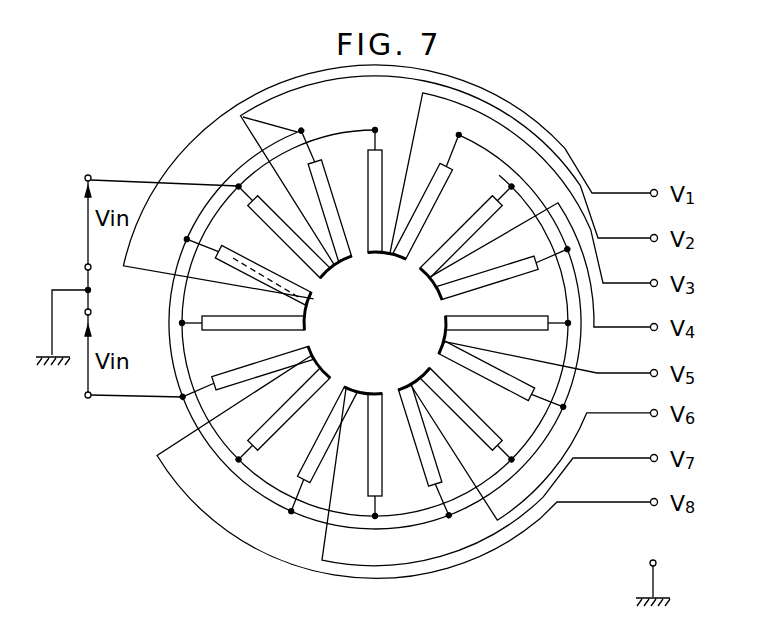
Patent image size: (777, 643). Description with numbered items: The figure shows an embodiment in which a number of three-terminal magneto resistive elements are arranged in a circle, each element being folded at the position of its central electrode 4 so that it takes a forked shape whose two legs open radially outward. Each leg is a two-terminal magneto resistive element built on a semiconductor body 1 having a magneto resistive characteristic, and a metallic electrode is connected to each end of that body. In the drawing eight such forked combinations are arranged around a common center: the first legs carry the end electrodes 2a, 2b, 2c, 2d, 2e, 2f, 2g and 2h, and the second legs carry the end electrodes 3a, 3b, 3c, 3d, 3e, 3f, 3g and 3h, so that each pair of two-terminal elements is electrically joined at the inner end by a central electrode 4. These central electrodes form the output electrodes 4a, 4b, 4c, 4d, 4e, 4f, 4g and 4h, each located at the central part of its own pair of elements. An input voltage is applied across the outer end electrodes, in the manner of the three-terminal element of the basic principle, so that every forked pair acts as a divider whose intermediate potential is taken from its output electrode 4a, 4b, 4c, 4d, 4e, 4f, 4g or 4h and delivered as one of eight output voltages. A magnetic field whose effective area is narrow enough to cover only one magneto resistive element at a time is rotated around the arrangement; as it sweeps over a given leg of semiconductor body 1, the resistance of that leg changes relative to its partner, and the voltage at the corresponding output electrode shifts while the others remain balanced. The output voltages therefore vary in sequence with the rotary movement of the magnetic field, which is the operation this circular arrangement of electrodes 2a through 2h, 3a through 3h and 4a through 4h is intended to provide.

The semiconductor body 1 is at (375, 320).
The end electrode 2a is at (387, 186).
The end electrode 2b is at (469, 225).
The end electrode 2c is at (508, 311).
The end electrode 2d is at (471, 417).
The end electrode 2e is at (387, 456).
The end electrode 2f is at (281, 418).
The end electrode 2g is at (242, 337).
The end electrode 2h is at (281, 224).
The end electrode 3a is at (435, 195).
The end electrode 3b is at (502, 270).
The end electrode 3c is at (502, 375).
The end electrode 3d is at (428, 450).
The end electrode 3e is at (323, 450).
The end electrode 3f is at (248, 376).
The end electrode 3g is at (247, 259).
The end electrode 3h is at (322, 196).
The central electrode 4 is at (266, 264).
The output electrode 4a is at (378, 260).
The output electrode 4b is at (426, 291).
The output electrode 4c is at (440, 336).
The output electrode 4d is at (408, 376).
The output electrode 4e is at (362, 392).
The output electrode 4f is at (319, 358).
The output electrode 4g is at (322, 311).
The output electrode 4h is at (337, 271).